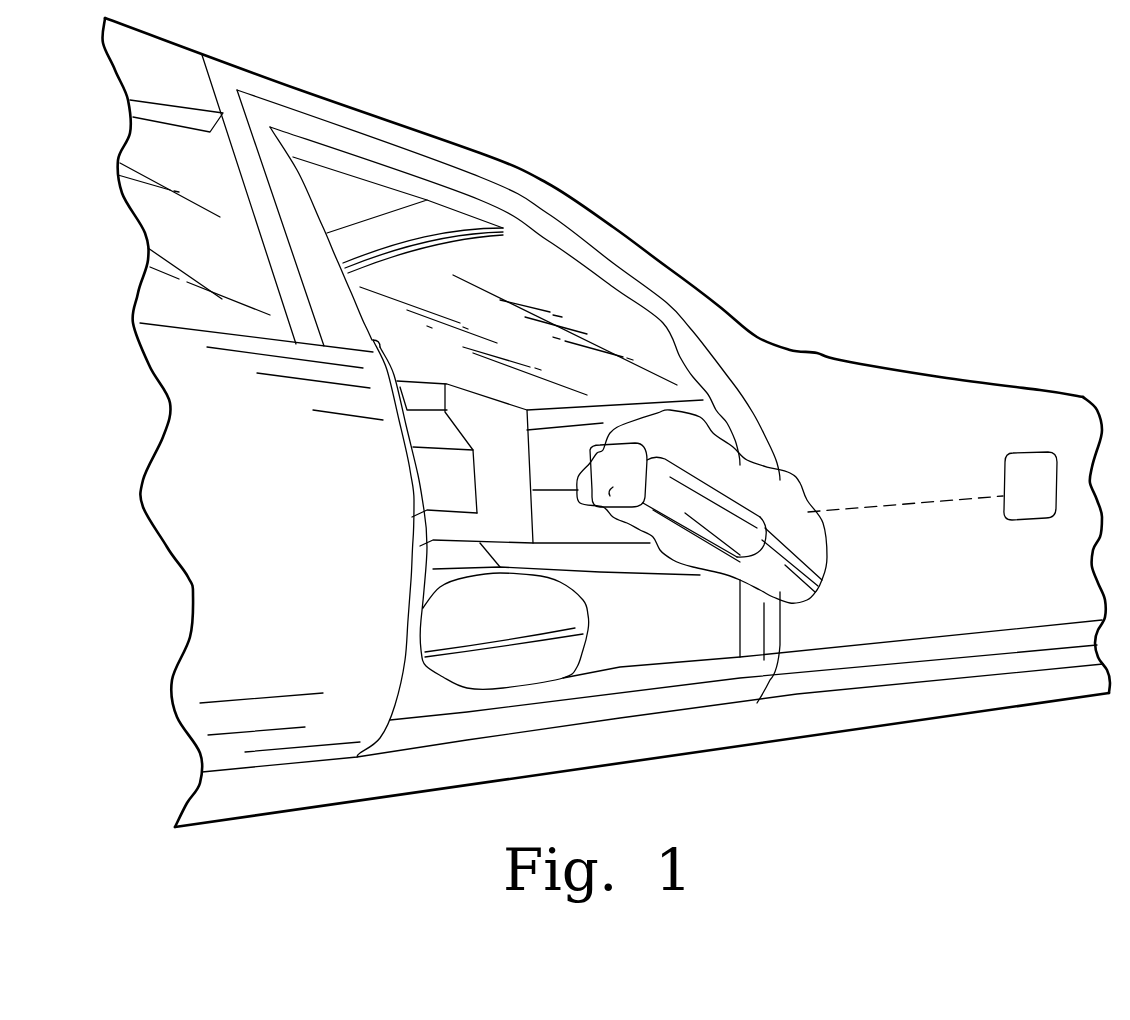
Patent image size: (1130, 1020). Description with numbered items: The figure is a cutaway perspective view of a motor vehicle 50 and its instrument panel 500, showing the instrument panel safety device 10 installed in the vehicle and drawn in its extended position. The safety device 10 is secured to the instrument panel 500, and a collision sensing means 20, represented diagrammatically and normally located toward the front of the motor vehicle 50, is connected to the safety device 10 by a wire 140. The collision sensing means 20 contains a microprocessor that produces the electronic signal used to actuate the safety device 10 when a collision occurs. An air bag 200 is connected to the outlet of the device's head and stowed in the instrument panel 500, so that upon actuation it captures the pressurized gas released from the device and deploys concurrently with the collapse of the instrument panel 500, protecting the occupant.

The instrument panel safety device 10 is at (770, 523).
The collision sensing means 20 is at (1030, 520).
The motor vehicle 50 is at (620, 250).
The wire 140 is at (897, 504).
The air bag 200 is at (613, 493).
The instrument panel 500 is at (547, 470).